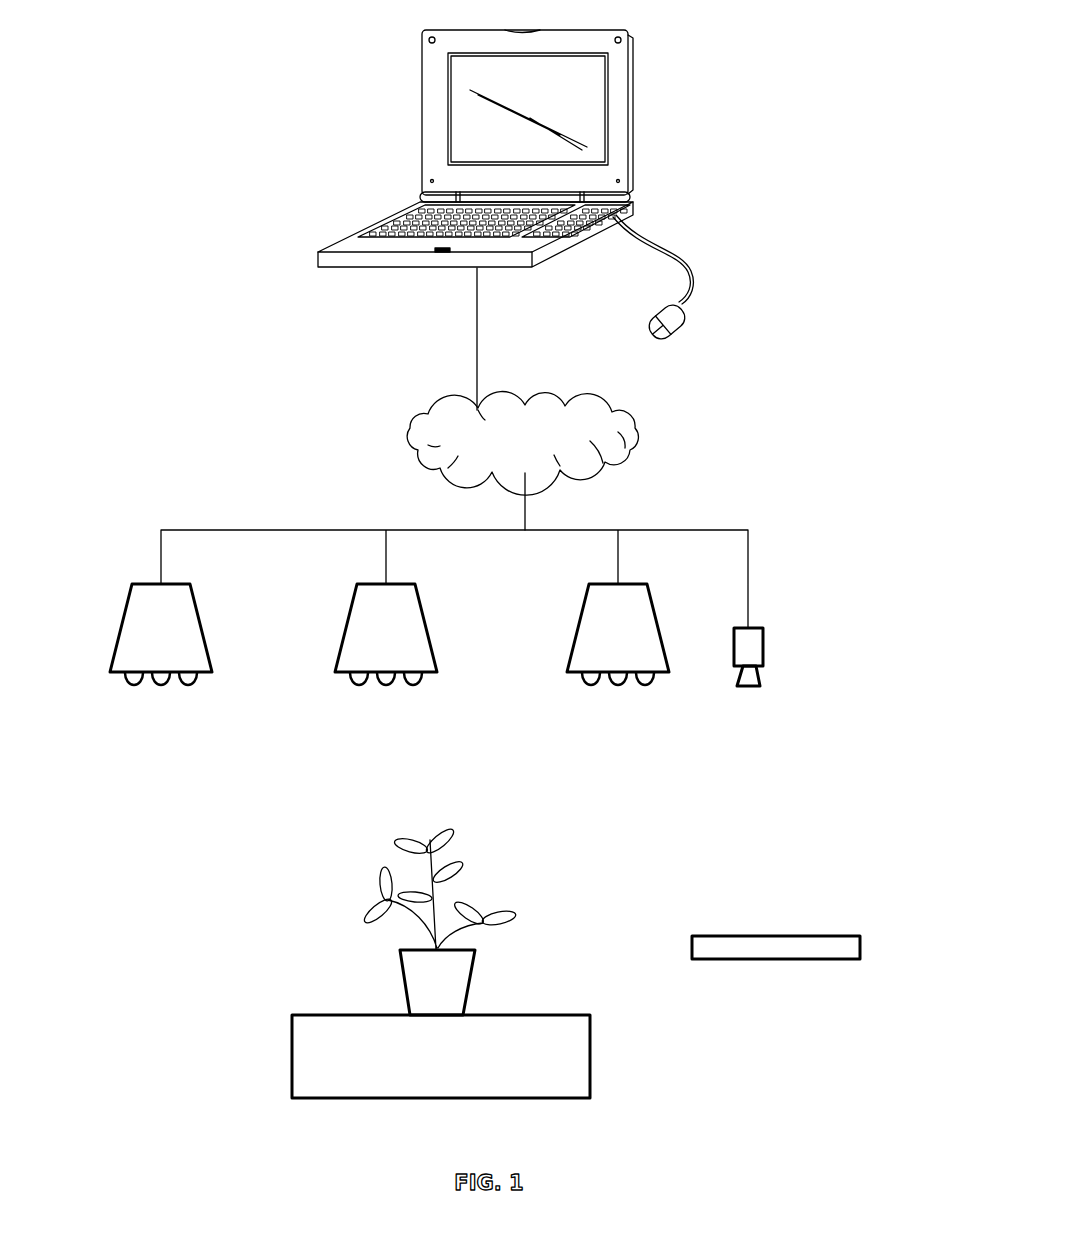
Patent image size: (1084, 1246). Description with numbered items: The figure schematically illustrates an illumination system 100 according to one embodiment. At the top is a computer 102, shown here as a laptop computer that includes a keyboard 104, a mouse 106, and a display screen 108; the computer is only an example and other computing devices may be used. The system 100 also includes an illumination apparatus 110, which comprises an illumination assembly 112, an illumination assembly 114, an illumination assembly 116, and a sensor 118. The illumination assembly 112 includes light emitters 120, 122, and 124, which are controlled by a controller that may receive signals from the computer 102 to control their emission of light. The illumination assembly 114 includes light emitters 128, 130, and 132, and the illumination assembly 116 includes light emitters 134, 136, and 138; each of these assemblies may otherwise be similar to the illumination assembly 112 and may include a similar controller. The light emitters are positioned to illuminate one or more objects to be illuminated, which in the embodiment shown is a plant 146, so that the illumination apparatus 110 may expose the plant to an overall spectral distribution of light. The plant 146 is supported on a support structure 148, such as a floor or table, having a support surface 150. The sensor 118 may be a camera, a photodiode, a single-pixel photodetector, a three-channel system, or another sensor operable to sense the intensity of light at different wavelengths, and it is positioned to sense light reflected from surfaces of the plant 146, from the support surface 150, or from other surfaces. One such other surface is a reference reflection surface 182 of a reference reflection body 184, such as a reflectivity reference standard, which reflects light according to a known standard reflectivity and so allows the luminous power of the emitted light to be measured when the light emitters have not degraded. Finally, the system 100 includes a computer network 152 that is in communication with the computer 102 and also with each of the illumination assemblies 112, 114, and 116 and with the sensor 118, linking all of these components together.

The illumination system 100 is at (230, 119).
The computer 102 is at (425, 91).
The keyboard 104 is at (400, 225).
The mouse 106 is at (655, 313).
The display screen 108 is at (528, 109).
The illumination apparatus 110 is at (859, 543).
The illumination assembly 112 is at (130, 637).
The illumination assembly 114 is at (352, 643).
The illumination assembly 116 is at (585, 643).
The sensor 118 is at (750, 648).
The light emitter 120 is at (134, 686).
The light emitter 122 is at (161, 686).
The light emitter 124 is at (188, 686).
The light emitter 128 is at (359, 686).
The light emitter 130 is at (386, 686).
The light emitter 132 is at (413, 686).
The light emitter 134 is at (591, 686).
The light emitter 136 is at (618, 686).
The light emitter 138 is at (645, 686).
The plant 146 is at (387, 908).
The support structure 148 is at (441, 1056).
The support surface 150 is at (550, 1013).
The computer network 152 is at (522, 444).
The reference reflection surface 182 is at (833, 936).
The reference reflection body 184 is at (750, 960).